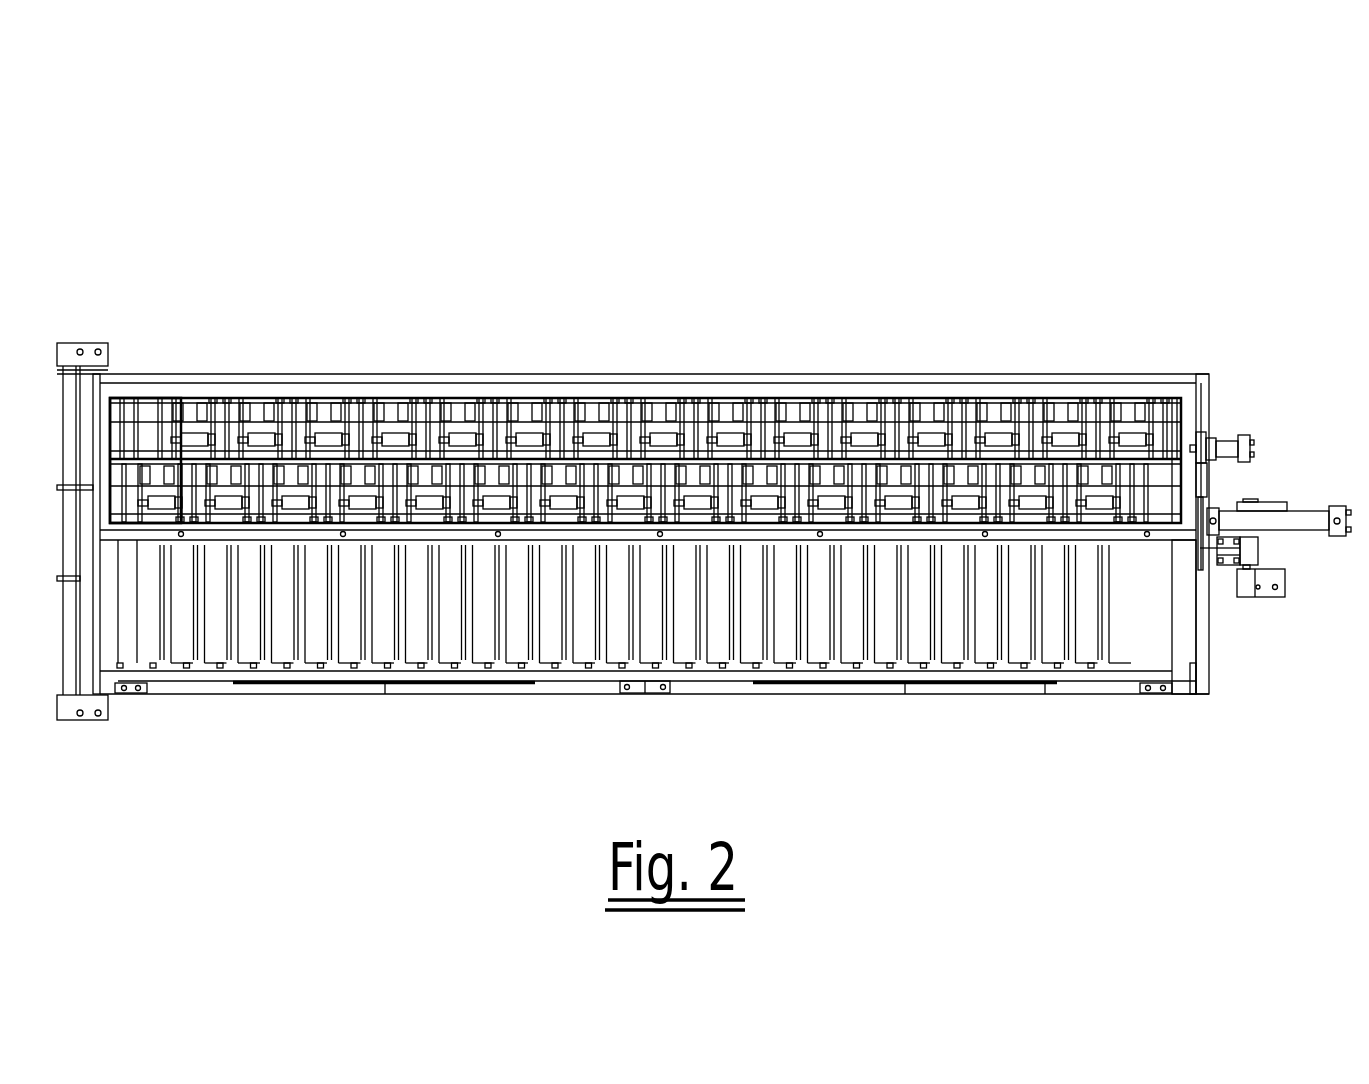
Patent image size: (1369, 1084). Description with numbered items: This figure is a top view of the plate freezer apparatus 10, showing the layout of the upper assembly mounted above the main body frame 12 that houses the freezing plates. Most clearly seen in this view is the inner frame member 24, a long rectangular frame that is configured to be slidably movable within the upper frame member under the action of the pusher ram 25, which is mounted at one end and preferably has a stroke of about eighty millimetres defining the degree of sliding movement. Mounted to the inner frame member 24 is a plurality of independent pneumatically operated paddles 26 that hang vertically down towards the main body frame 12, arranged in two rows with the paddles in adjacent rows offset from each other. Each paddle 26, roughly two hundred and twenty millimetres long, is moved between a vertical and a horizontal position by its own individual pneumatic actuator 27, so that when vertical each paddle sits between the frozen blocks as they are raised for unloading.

The plate freezer apparatus 10 is at (633, 399).
The main body frame 12 is at (1186, 684).
The inner frame member 24 is at (1013, 391).
The pusher ram 25 is at (1225, 441).
The paddle 26 is at (160, 437).
The pneumatic actuator 27 is at (340, 437).